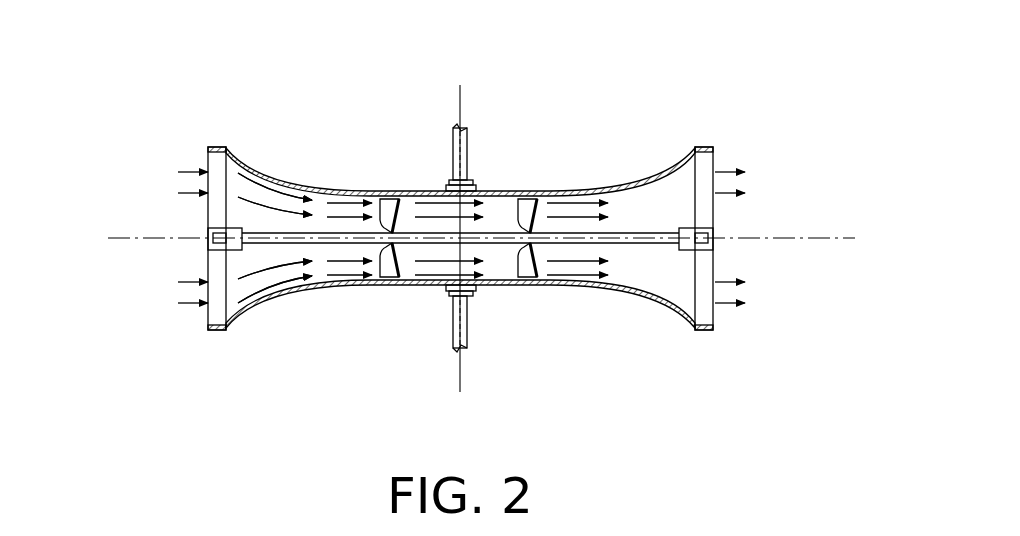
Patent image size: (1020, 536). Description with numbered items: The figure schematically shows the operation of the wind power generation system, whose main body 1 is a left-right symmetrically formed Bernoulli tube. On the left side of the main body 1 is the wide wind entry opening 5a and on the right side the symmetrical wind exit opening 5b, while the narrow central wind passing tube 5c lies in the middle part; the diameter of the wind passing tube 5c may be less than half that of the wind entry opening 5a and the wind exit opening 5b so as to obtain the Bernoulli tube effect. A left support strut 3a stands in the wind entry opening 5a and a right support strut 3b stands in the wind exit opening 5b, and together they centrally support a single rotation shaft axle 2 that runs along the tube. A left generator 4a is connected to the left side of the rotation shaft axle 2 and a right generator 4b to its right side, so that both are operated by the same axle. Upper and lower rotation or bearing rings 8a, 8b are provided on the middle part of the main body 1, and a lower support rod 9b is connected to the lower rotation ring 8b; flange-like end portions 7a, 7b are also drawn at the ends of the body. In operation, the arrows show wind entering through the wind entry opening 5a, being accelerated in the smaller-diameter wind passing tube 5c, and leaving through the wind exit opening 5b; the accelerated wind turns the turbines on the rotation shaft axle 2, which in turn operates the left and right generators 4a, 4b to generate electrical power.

The main body 1 is at (500, 191).
The rotation shaft axle 2 is at (585, 240).
The left support strut 3a is at (215, 310).
The right support strut 3b is at (708, 290).
The left electric generator 4a is at (388, 199).
The right generator 4b is at (530, 198).
The wind entry opening 5a is at (208, 183).
The wind exit opening 5b is at (713, 180).
The wind passing tube 5c is at (515, 286).
The inlet flange seal 7a is at (216, 146).
The outlet flange seal 7b is at (704, 146).
The upper rotation ring 8a is at (447, 291).
The lower rotation ring 8b is at (447, 187).
The lower support rod 9b is at (463, 142).